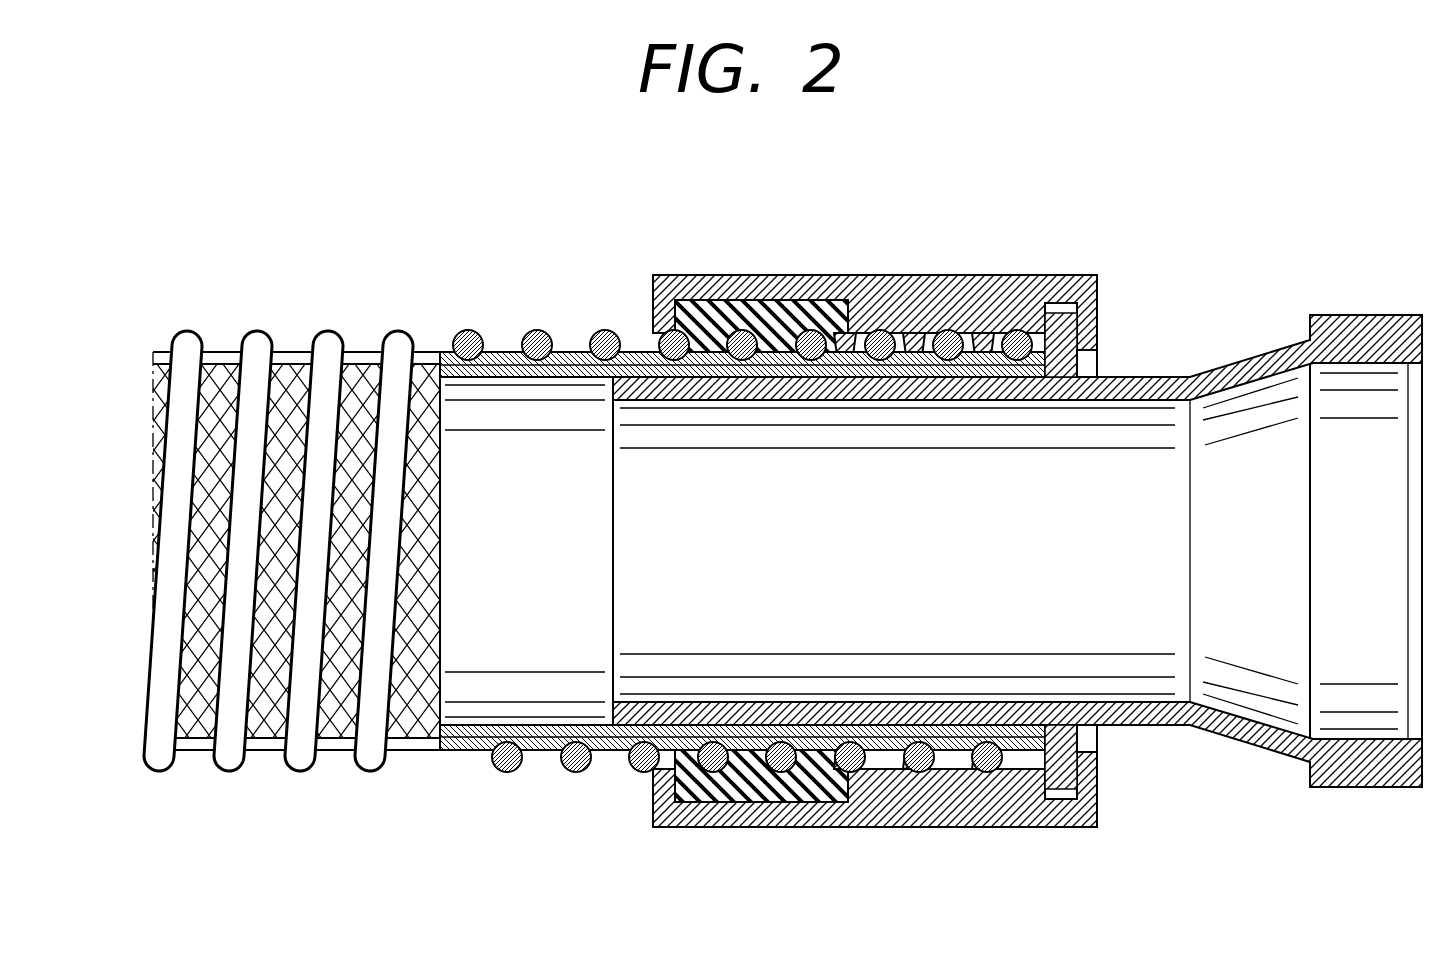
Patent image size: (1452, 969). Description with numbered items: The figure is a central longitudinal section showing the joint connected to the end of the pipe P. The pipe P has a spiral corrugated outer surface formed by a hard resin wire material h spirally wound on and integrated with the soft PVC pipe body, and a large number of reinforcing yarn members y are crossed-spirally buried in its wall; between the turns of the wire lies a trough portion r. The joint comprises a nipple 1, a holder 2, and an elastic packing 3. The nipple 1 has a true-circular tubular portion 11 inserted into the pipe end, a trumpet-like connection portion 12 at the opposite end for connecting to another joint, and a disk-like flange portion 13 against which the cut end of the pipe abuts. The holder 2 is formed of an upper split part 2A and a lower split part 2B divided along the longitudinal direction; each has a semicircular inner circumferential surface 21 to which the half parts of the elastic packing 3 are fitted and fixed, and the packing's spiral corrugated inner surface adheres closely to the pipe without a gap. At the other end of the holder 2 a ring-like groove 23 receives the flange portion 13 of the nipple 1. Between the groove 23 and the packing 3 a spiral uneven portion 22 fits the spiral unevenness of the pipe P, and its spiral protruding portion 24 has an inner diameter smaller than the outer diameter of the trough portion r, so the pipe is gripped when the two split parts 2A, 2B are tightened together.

The pipe P is at (252, 308).
The hard resin wire material h is at (325, 342).
The reinforcing yarn members y is at (375, 357).
The trough portion r is at (498, 353).
The holder 2 is at (829, 536).
The upper split part 2A is at (700, 273).
The lower split part 2B is at (747, 827).
The elastic packing 3 is at (783, 305).
The inner circumferential surface 21 is at (855, 330).
The spiral uneven portion 22 is at (935, 330).
The spiral protruding portion 24 is at (993, 337).
The ring-like groove 23 is at (1067, 307).
The nipple 1 is at (1017, 495).
The true-circular tubular portion 11 is at (655, 562).
The connection portion 12 is at (1367, 315).
The flange portion 13 is at (1090, 738).